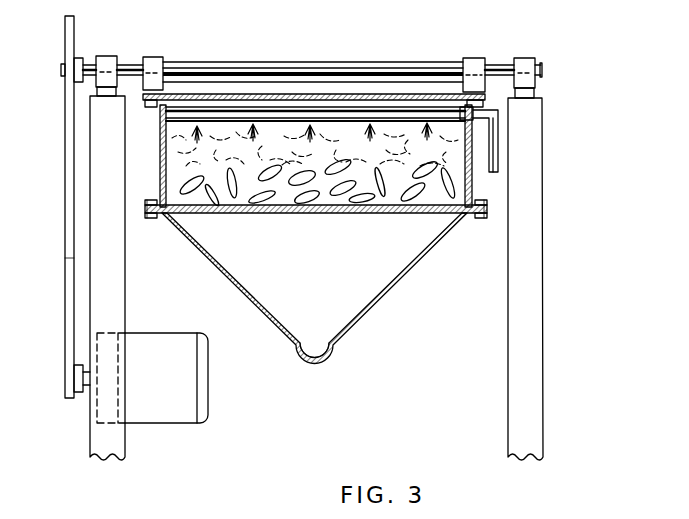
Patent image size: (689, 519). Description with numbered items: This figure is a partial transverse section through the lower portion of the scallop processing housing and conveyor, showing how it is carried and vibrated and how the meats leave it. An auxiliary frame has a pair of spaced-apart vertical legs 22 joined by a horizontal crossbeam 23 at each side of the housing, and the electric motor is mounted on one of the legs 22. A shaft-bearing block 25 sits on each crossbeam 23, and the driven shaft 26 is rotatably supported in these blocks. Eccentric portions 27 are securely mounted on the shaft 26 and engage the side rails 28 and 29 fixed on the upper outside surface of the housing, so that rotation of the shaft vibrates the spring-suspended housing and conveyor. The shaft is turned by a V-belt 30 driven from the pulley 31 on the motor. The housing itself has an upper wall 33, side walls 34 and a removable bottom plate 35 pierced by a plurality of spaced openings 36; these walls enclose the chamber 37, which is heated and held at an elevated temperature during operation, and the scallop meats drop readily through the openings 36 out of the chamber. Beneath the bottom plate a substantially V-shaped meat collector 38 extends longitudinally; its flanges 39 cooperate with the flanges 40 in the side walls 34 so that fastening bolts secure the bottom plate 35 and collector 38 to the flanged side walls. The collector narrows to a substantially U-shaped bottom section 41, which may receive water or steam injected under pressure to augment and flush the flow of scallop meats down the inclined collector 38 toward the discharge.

The vertical legs 22 is at (118, 303).
The horizontal crossbeam 23 is at (174, 396).
The shaft-bearing block 25 is at (110, 58).
The driven shaft 26 is at (541, 67).
The eccentric portions 27 is at (157, 58).
The side rail 28 is at (163, 93).
The side rail 29 is at (465, 90).
The V-belt 30 is at (70, 258).
The pulley 31 is at (75, 33).
The upper wall 33 is at (284, 96).
The side wall 34 is at (162, 158).
The removable bottom plate 35 is at (302, 213).
The spaced openings 36 is at (318, 213).
The chamber 37 is at (327, 147).
The meat collector 38 is at (395, 285).
The flanges 39 is at (160, 216).
The flanges 40 is at (147, 199).
The U-shaped bottom section 41 is at (322, 372).